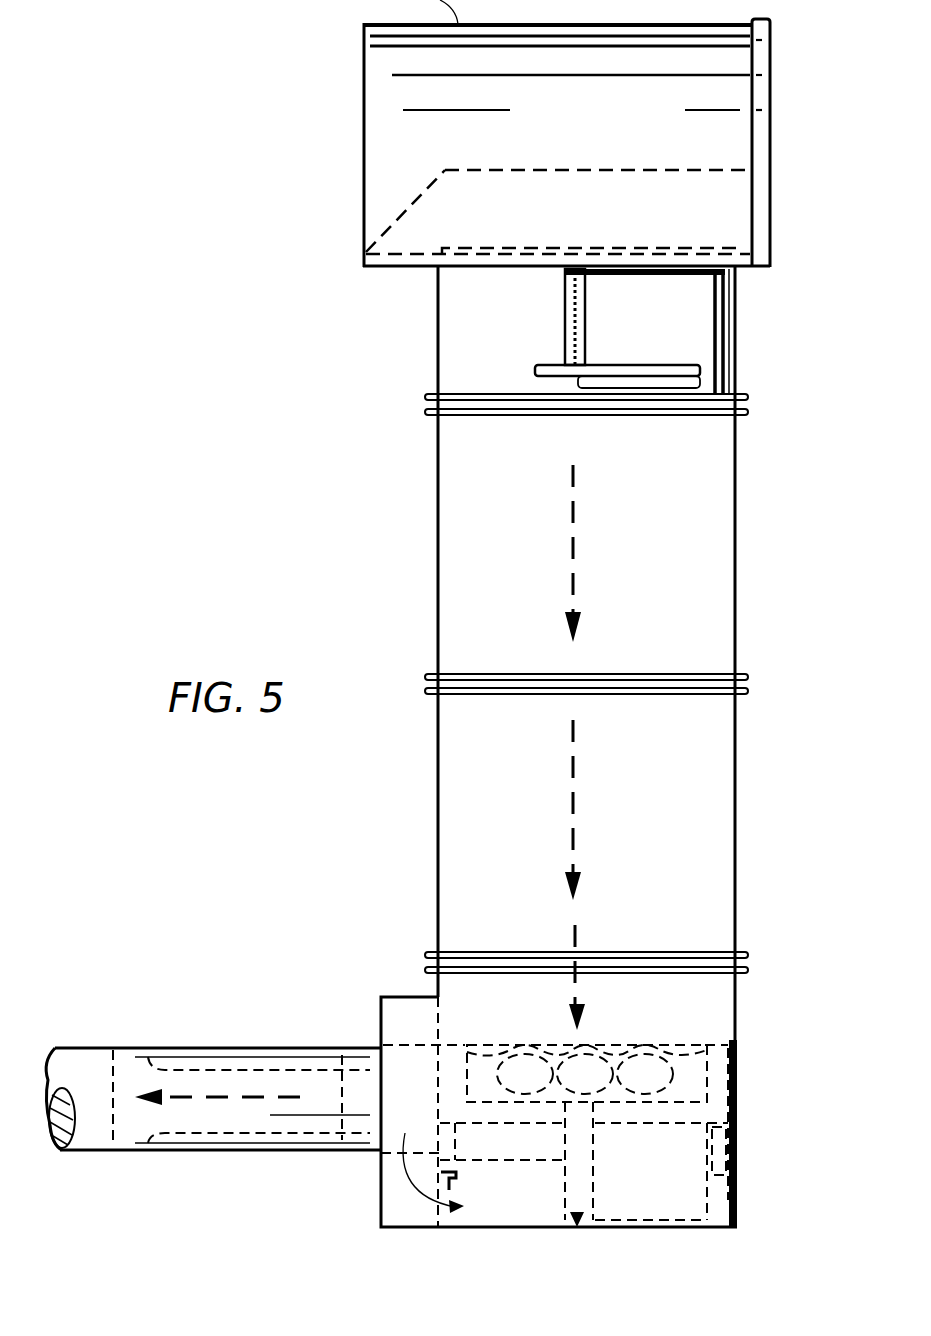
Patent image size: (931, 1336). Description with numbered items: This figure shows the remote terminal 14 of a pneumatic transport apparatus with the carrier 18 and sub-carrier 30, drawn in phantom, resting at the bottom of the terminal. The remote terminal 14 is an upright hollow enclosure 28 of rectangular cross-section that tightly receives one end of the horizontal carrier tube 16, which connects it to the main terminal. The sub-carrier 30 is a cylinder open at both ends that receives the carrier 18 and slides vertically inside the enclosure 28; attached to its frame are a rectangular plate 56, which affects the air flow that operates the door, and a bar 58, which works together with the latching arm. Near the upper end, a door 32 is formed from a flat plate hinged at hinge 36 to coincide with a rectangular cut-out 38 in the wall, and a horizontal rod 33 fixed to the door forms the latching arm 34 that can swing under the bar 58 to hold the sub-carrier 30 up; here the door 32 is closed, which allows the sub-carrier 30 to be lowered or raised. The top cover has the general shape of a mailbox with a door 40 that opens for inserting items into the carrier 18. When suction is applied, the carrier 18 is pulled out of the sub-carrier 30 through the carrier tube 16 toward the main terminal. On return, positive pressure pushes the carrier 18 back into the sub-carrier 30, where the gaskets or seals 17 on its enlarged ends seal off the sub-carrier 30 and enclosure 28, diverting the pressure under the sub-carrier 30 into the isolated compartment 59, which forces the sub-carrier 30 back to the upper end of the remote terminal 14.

The remote terminal 14 is at (412, 589).
The carrier tube 16 is at (74, 1048).
The gasket or seal 17 is at (113, 1050).
The carrier 18 is at (207, 1152).
The upright hollow enclosure 28 is at (737, 572).
The sub-carrier 30 is at (704, 1046).
The door 32 is at (690, 338).
The horizontal rod 33 is at (653, 376).
The latching arm 34 is at (553, 365).
The hinge 36 is at (586, 302).
The rectangular cut-out 38 is at (725, 334).
The door 40 is at (770, 56).
The rectangular plate 56 is at (672, 1173).
The bar 58 is at (566, 1186).
The isolated compartment 59 is at (486, 1200).